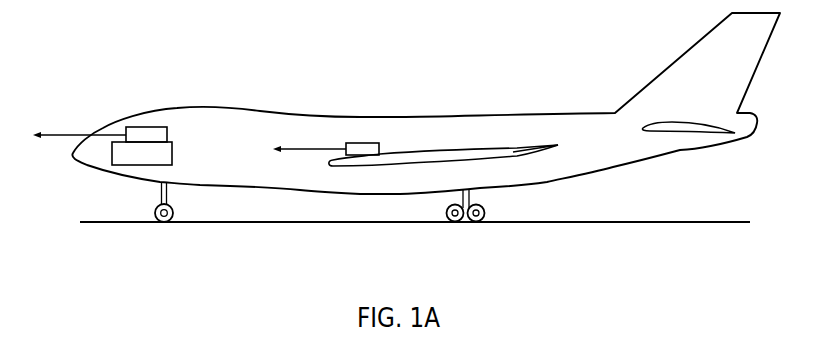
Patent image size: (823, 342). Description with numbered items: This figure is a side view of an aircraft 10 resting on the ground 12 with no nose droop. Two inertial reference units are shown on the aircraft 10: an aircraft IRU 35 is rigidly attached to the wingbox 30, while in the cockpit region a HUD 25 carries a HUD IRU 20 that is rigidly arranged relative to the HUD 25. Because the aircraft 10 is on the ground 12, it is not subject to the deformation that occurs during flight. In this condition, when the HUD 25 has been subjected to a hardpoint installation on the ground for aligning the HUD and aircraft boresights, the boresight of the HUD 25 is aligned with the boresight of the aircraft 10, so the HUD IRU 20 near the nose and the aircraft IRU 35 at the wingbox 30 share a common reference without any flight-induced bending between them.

The aircraft 10 is at (502, 60).
The ground 12 is at (670, 221).
The HUD IRU 20 is at (146, 134).
The HUD 25 is at (130, 153).
The wingbox 30 is at (435, 155).
The aircraft IRU 35 is at (357, 148).